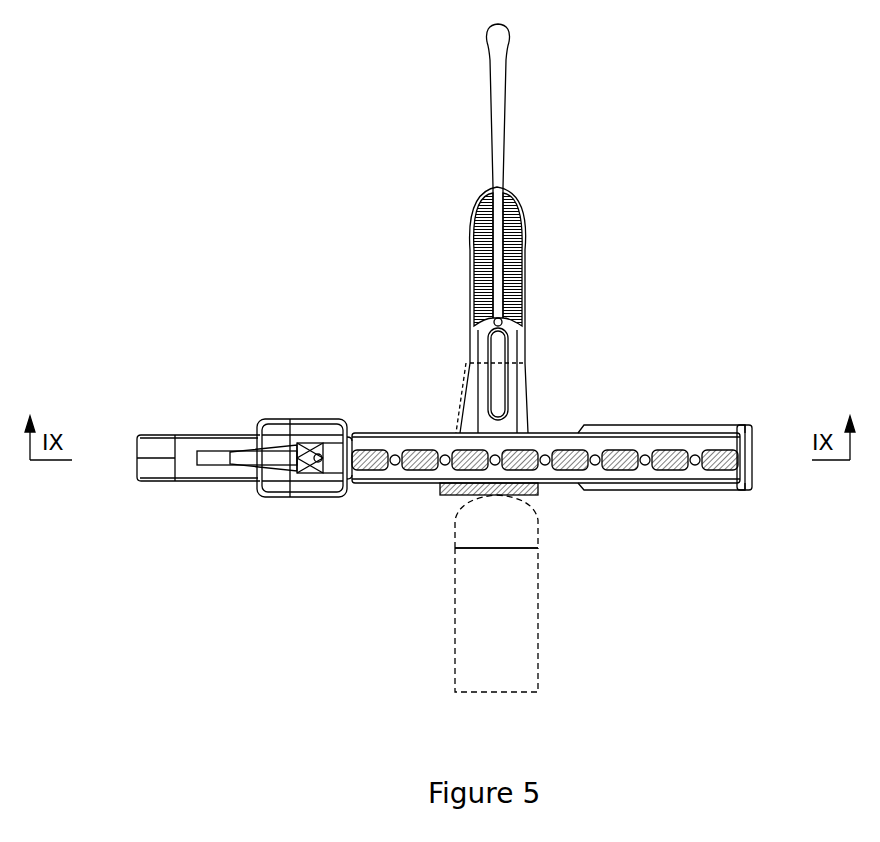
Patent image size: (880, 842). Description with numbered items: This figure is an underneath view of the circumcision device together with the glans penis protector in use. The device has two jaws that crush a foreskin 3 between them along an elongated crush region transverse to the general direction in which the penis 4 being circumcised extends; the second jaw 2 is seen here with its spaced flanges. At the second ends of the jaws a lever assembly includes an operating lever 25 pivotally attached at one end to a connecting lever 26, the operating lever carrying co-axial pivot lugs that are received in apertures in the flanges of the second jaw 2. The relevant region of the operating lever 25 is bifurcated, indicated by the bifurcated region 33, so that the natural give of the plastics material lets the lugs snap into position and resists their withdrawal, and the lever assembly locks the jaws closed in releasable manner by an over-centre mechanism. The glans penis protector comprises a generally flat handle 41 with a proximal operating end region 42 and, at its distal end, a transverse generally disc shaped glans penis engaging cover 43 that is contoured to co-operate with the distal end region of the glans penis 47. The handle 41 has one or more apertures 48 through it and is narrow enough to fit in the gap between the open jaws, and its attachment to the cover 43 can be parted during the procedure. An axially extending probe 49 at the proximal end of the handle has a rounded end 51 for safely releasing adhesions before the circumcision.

The second jaw 2 is at (598, 440).
The foreskin 3 is at (453, 507).
The penis 4 is at (497, 617).
The operating lever 25 is at (193, 468).
The connecting lever 26 is at (283, 470).
The bifurcated region 33 is at (321, 455).
The handle 41 is at (489, 320).
The proximal operating end region 42 is at (468, 213).
The glans penis engaging cover 43 is at (540, 505).
The glans penis 47 is at (533, 527).
The aperture 48 is at (497, 386).
The probe 49 is at (497, 103).
The rounded end 51 is at (495, 35).